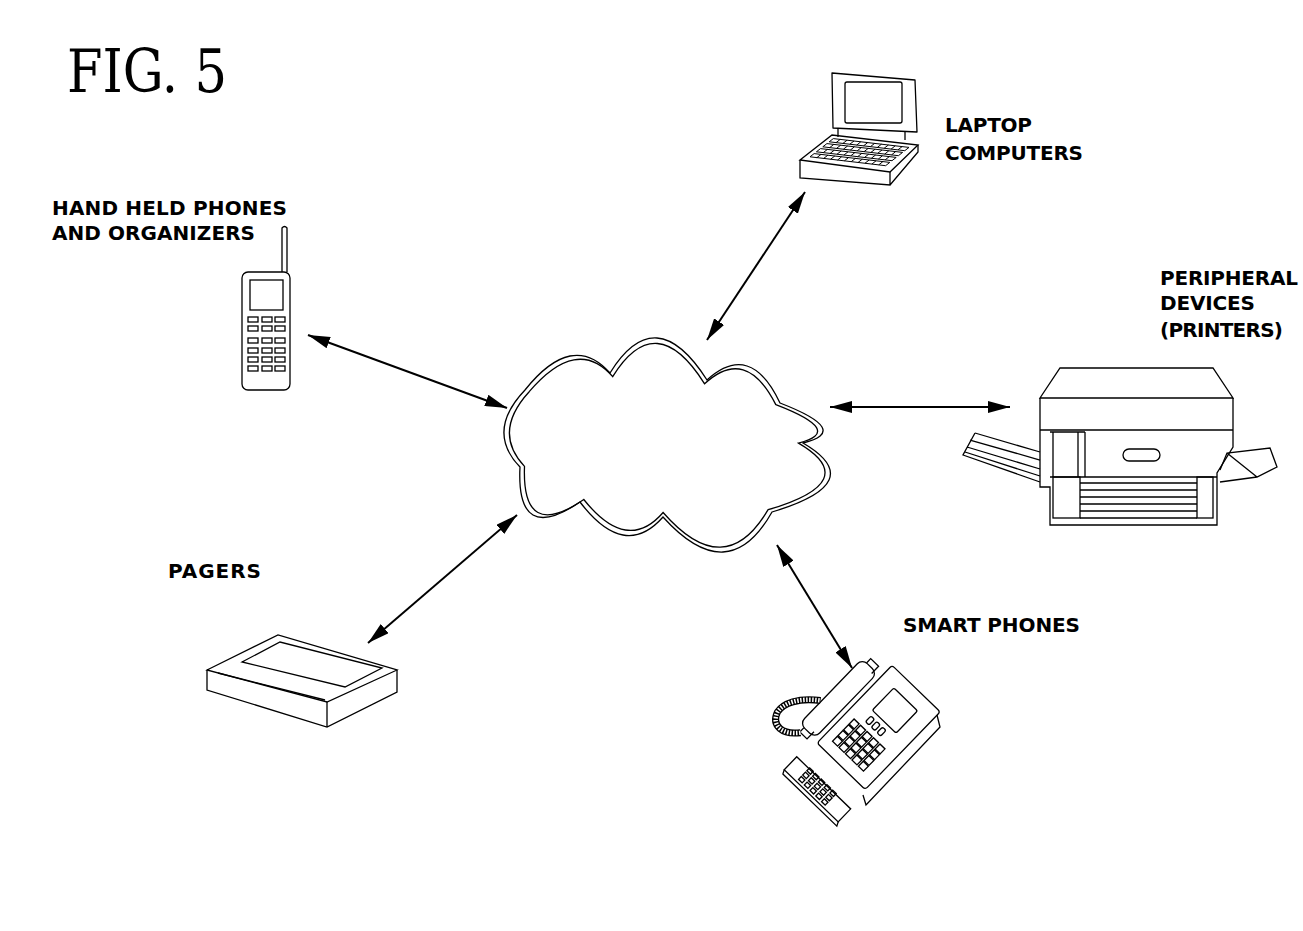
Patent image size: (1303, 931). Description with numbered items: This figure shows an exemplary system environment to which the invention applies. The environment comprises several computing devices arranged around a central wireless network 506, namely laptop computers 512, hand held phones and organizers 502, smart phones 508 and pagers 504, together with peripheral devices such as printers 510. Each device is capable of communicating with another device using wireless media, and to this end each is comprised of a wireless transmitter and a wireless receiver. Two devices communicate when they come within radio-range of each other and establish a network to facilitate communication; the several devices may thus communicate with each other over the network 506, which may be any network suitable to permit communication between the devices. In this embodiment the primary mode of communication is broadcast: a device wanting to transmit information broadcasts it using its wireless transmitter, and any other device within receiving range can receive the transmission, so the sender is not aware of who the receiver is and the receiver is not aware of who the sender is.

The hand held phones and organizers 502 is at (242, 333).
The pagers 504 is at (255, 645).
The network 506 is at (555, 362).
The smart phones 508 is at (918, 700).
The printers 510 is at (1120, 368).
The laptop computers 512 is at (900, 170).